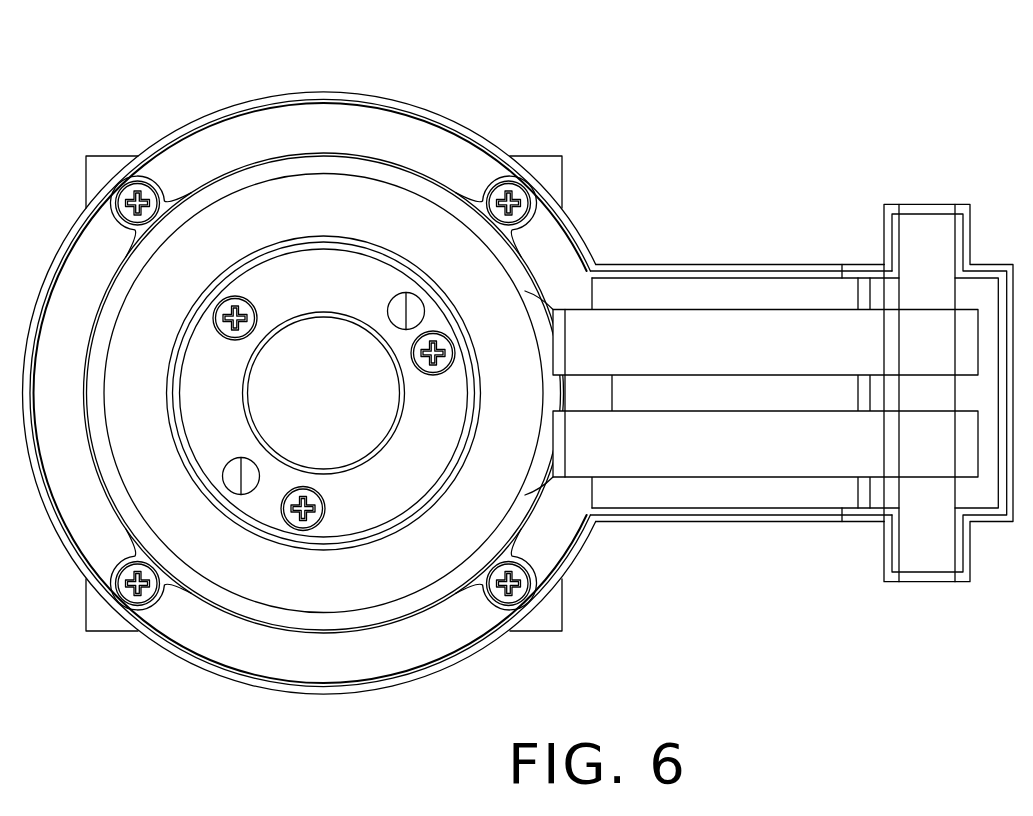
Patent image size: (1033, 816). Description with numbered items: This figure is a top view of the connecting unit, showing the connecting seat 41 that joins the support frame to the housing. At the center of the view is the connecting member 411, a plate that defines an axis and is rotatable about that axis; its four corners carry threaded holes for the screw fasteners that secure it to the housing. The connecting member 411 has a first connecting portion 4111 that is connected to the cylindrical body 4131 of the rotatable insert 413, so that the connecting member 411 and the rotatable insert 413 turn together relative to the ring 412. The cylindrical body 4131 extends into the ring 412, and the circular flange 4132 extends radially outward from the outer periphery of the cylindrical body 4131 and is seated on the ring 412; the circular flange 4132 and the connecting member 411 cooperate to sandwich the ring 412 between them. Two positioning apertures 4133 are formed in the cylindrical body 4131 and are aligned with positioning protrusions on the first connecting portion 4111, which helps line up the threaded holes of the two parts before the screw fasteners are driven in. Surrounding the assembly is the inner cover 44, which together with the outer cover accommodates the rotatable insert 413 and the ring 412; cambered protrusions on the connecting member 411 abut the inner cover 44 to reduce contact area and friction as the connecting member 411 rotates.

The connecting seat 41 is at (653, 180).
The connecting member 411 is at (537, 157).
The first connecting portion 4111 is at (424, 311).
The ring 412 is at (527, 287).
The rotatable insert 413 is at (324, 279).
The cylindrical body 4131 is at (333, 282).
The circular flange 4132 is at (303, 203).
The positioning apertures 4133 is at (397, 296).
The inner cover 44 is at (172, 648).